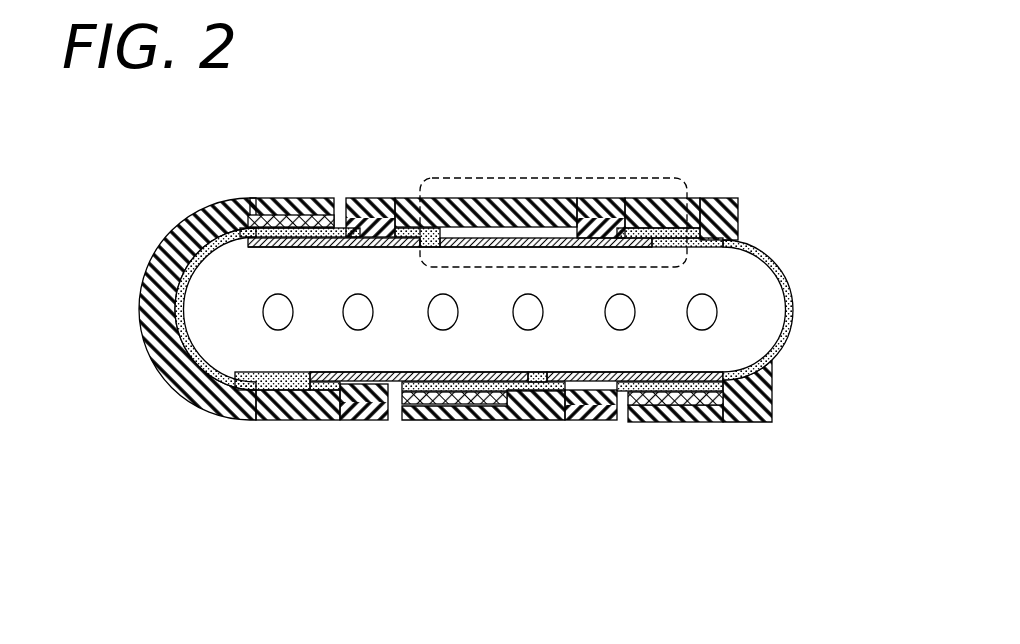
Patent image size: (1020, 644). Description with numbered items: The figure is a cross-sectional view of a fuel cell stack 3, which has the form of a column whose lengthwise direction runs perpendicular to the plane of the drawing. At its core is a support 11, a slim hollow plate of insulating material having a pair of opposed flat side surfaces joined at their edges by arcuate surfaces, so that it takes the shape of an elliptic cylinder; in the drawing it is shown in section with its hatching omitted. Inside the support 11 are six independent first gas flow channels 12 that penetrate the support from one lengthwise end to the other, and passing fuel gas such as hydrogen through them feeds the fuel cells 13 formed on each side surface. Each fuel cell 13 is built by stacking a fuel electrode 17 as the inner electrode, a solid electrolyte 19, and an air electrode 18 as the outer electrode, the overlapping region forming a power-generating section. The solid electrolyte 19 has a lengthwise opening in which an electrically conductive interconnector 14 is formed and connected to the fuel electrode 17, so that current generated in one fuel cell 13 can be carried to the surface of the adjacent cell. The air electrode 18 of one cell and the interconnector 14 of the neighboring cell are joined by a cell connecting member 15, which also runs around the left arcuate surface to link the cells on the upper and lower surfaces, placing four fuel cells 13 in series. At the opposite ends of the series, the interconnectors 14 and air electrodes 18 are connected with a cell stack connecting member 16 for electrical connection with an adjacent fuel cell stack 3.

The fuel cell stack 3 is at (736, 180).
The support 11 is at (235, 343).
The first gas flow channel 12 is at (707, 310).
The fuel cell 13 is at (324, 201).
The interconnector 14 is at (397, 212).
The cell connecting member 15 is at (417, 243).
The cell stack connecting member 16 is at (750, 463).
The fuel electrode 17 is at (263, 205).
The air electrode 18 is at (297, 220).
The solid electrolyte 19 is at (208, 232).